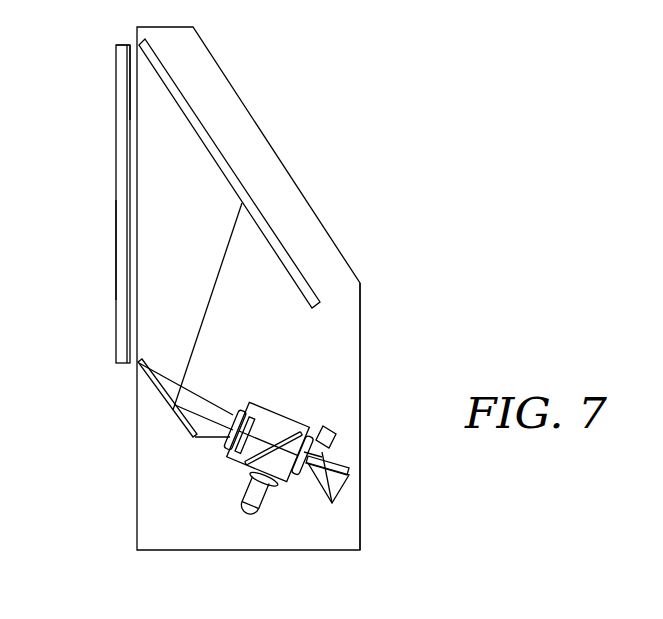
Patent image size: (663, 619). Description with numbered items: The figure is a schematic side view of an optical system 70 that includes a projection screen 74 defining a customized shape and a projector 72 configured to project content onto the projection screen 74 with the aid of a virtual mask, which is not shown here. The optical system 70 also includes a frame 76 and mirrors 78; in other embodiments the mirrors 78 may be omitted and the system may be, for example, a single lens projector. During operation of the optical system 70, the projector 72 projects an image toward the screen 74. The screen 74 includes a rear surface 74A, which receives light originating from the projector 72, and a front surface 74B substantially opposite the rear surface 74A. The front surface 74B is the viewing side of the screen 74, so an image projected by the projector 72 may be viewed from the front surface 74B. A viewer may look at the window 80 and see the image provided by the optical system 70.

The optical system 70 is at (418, 283).
The projector 72 is at (288, 423).
The projection screen 74 is at (119, 80).
The rear surface 74A is at (133, 44).
The front surface 74B is at (128, 152).
The frame 76 is at (361, 500).
The mirrors 78 is at (188, 405).
The window 80 is at (113, 241).